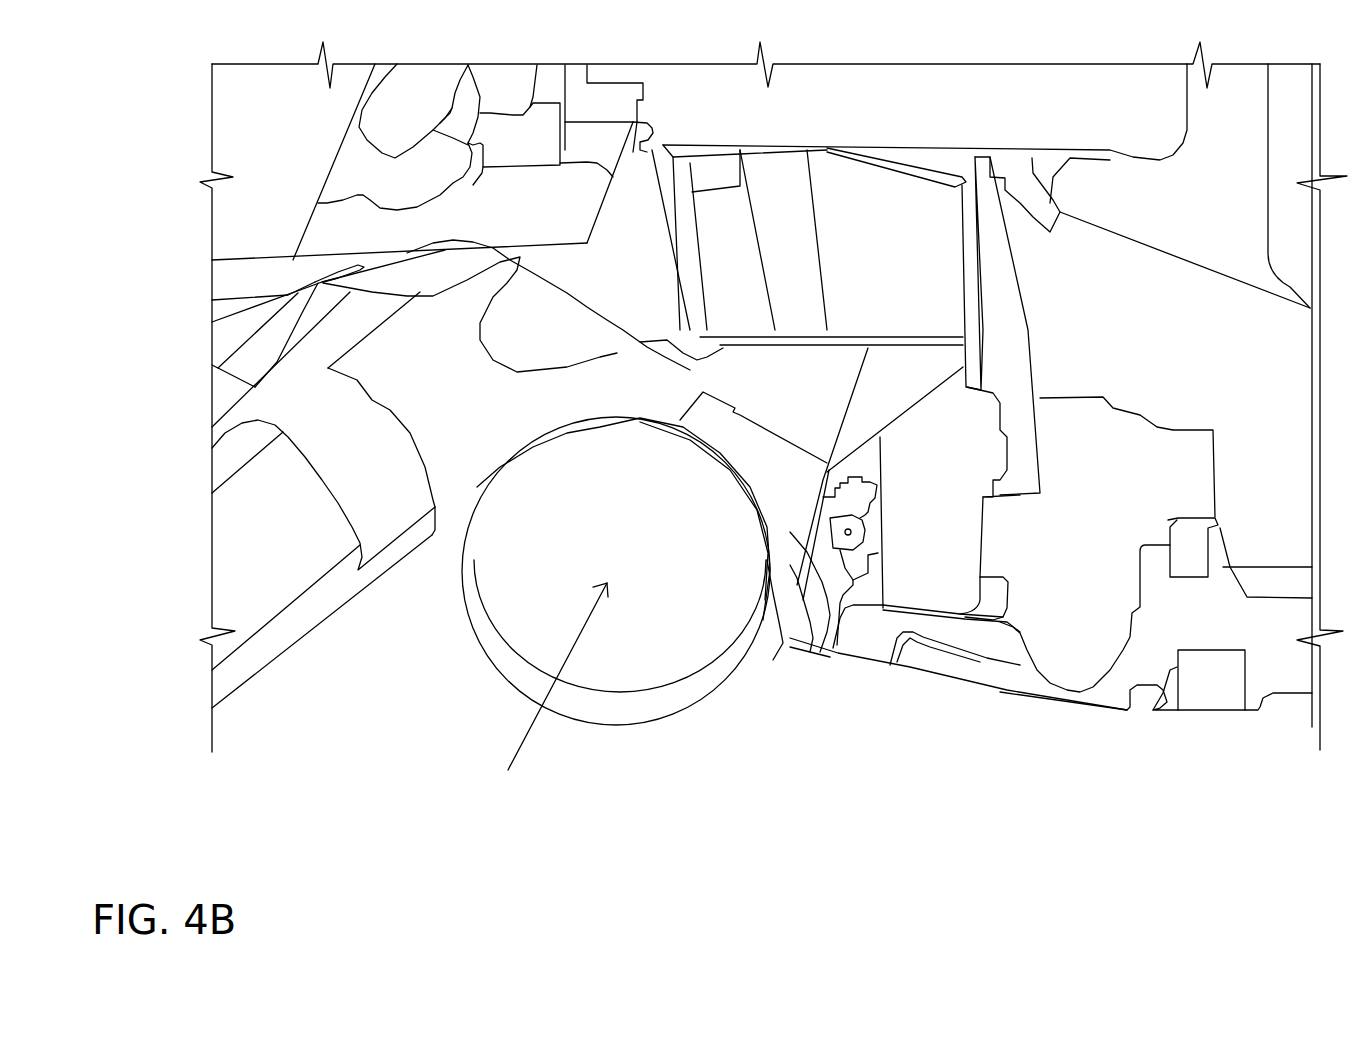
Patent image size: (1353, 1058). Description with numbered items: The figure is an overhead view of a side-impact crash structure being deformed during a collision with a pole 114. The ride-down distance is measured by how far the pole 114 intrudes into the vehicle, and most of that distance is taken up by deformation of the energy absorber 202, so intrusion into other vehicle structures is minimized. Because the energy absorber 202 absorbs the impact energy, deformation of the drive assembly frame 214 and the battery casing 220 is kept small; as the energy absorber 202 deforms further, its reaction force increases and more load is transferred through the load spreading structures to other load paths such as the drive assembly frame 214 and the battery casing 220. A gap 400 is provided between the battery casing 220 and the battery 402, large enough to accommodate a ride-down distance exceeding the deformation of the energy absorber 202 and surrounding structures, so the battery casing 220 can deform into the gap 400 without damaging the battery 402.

The pole 114 is at (708, 685).
The energy absorber 202 is at (824, 600).
The drive assembly frame 214 is at (905, 387).
The battery casing 220 is at (712, 167).
The gap 400 is at (927, 158).
The battery 402 is at (1080, 87).